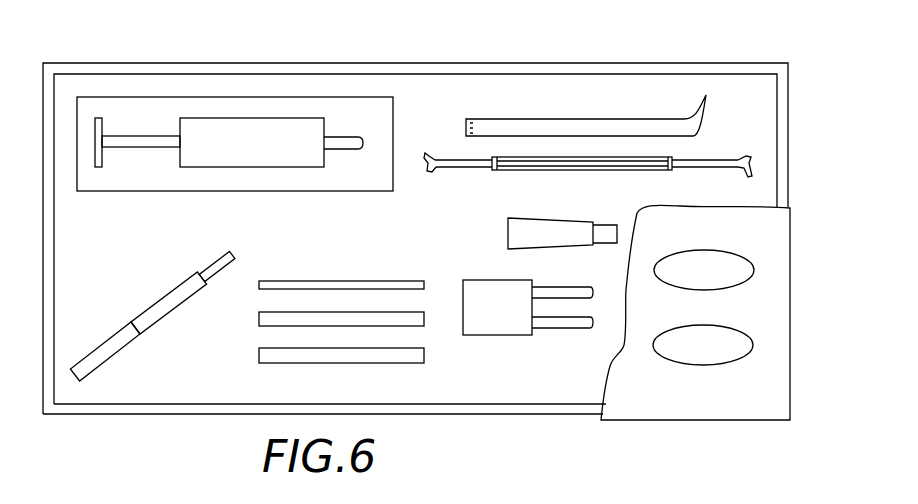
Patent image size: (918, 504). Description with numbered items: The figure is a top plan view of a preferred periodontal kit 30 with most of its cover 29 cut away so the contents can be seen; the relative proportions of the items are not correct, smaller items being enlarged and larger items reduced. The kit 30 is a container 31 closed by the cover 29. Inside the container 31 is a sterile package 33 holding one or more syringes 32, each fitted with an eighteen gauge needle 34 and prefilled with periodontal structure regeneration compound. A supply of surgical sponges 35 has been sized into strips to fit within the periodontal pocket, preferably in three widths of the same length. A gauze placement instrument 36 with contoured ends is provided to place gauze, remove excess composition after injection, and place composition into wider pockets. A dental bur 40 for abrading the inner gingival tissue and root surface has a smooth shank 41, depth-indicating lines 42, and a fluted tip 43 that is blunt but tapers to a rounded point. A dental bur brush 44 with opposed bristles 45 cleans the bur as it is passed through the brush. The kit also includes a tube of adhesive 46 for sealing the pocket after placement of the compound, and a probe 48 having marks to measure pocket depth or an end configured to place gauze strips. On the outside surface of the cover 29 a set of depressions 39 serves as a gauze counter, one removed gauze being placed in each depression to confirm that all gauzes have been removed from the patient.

The cover 29 is at (702, 422).
The kit 30 is at (109, 54).
The container 31 is at (782, 99).
The syringe 32 is at (203, 168).
The sterile package 33 is at (350, 108).
The 18 gauge needle 34 is at (352, 151).
The surgical sponges 35 is at (310, 268).
The gauze placement instrument 36 is at (579, 172).
The depressions 39 is at (712, 257).
The dental bur 40 is at (152, 308).
The smooth shank 41 is at (122, 348).
The lines 42 is at (182, 307).
The fluted tip 43 is at (215, 260).
The dental bur brush 44 is at (503, 329).
The opposed bristles 45 is at (563, 312).
The tube of adhesive 46 is at (508, 233).
The probe 48 is at (587, 118).